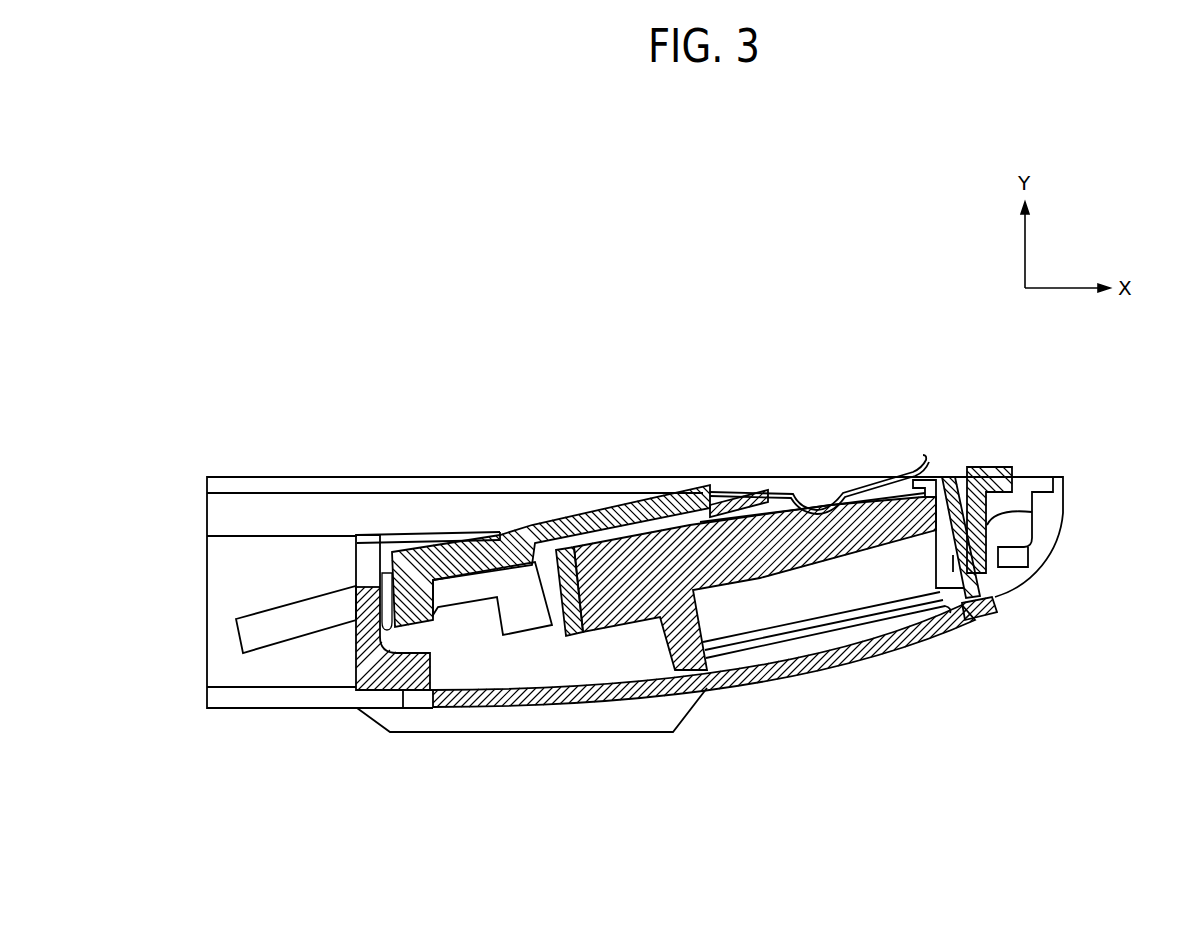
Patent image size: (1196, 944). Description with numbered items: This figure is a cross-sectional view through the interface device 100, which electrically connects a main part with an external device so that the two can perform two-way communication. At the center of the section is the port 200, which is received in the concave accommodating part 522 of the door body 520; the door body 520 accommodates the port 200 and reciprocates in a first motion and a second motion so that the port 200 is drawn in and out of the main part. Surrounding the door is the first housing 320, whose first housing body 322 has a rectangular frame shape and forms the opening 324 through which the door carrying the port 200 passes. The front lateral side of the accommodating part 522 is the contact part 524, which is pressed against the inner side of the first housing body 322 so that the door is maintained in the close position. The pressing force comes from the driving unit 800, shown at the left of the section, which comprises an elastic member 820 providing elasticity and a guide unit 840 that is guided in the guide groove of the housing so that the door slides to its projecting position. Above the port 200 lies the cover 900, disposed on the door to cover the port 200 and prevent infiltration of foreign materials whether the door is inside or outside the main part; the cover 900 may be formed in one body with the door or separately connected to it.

The interface device 100 is at (803, 324).
The port 200 is at (785, 535).
The first housing 320 is at (1081, 540).
The first housing body 322 is at (990, 500).
The opening 324 is at (1142, 503).
The door body 520 is at (715, 663).
The accommodating part 522 is at (600, 665).
The contact part 524 is at (969, 643).
The driving unit 800 is at (473, 523).
The elastic member 820 is at (393, 572).
The guide unit 840 is at (285, 617).
The cover 900 is at (537, 527).